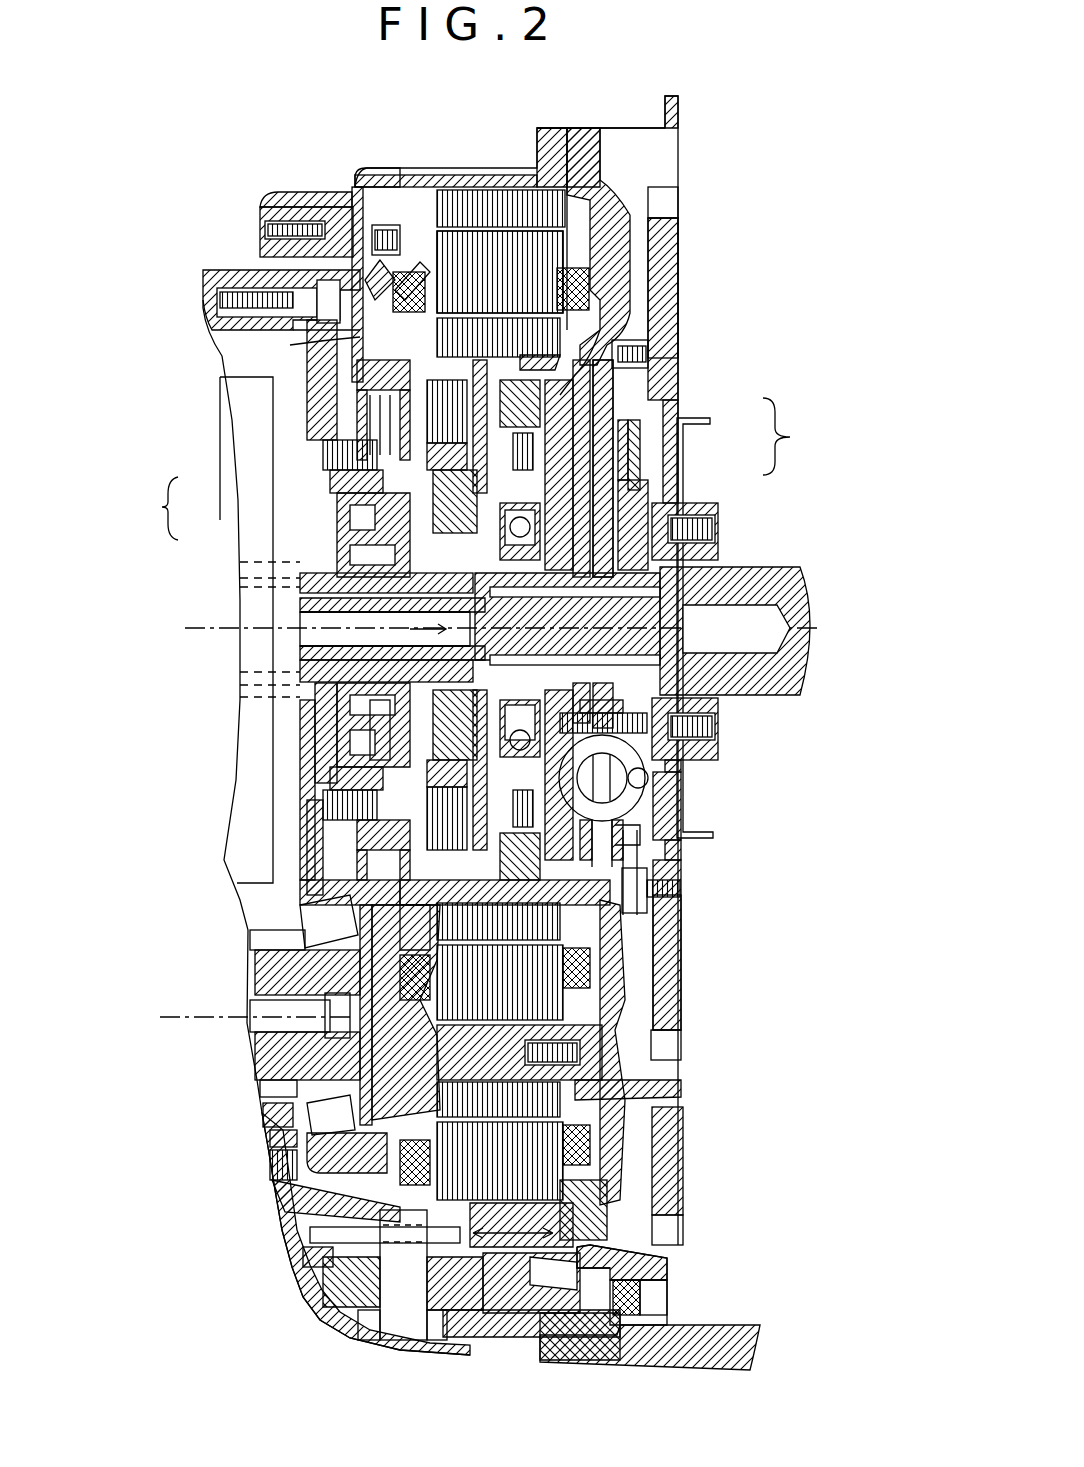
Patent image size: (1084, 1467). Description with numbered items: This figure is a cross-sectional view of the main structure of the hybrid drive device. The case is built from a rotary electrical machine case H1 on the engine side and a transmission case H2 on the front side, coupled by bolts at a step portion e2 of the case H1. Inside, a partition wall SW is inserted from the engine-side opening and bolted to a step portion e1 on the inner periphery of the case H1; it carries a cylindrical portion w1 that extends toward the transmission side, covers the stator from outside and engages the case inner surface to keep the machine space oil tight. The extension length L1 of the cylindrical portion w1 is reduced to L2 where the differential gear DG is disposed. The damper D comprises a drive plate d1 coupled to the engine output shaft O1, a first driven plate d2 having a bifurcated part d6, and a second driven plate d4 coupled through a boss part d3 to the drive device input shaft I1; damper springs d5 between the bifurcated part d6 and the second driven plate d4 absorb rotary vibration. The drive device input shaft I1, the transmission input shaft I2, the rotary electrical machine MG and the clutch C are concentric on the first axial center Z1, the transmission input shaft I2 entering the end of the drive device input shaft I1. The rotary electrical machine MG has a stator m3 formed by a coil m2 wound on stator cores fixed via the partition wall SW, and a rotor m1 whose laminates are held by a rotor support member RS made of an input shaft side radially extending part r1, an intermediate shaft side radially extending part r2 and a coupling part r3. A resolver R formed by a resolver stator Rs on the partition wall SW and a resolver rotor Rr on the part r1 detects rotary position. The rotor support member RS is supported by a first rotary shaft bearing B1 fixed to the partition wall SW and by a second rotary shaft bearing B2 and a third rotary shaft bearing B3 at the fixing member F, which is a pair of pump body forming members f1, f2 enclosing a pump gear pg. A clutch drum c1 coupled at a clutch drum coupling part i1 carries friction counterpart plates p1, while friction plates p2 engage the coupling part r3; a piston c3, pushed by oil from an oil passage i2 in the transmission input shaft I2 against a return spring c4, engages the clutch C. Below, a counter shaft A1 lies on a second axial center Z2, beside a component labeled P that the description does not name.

The rotary electrical machine MG is at (516, 186).
The coil m2 is at (405, 270).
The stator m3 is at (468, 190).
The step portion e2 is at (400, 183).
The rotary electrical machine case H1 is at (672, 113).
The step portion e1 is at (597, 148).
The partition wall SW is at (630, 240).
The rotor support member RS is at (591, 330).
The bifurcated part d6 is at (645, 352).
The coupling part r3 is at (546, 368).
The transmission case H2 is at (217, 272).
The rotor m1 is at (292, 337).
The friction plates p2 is at (358, 380).
The friction counterpart plates p1 is at (355, 430).
The clutch drum c1 is at (360, 445).
The return spring c4 is at (358, 497).
The fixing member F is at (160, 508).
The pump body forming member f1 is at (355, 512).
The pump body forming member f2 is at (352, 540).
The third rotary shaft bearing B3 is at (300, 578).
The oil passage i2 is at (322, 618).
The first axial center Z1 is at (475, 630).
The transmission input shaft I2 is at (302, 656).
The second rotary shaft bearing B2 is at (322, 737).
The pump gear pg is at (340, 748).
The clutch drum coupling part i1 is at (410, 702).
The piston c3 is at (335, 836).
The intermediate shaft side radially extending part r2 is at (312, 882).
The bearing P is at (267, 935).
The second axial center Z2 is at (255, 1015).
The counter shaft A1 is at (260, 1057).
The input shaft side radially extending part r1 is at (404, 918).
The extension length of cylindrical portion L1 is at (695, 1110).
The differential gear DG is at (288, 1272).
The shortened extension length L2 is at (448, 1272).
The clutch C is at (610, 432).
The resolver stator Rs is at (617, 447).
The resolver rotor Rr is at (577, 483).
The resolver R is at (791, 436).
The first rotary shaft bearing B1 is at (563, 523).
The boss part d3 is at (670, 580).
The engine output shaft O1 is at (780, 567).
The drive device input shaft I1 is at (733, 700).
The damper springs d5 is at (648, 778).
The first driven plate d2 is at (633, 835).
The damper D is at (701, 894).
The drive plate d1 is at (681, 920).
The second driven plate d4 is at (638, 927).
The cylindrical portion w1 is at (525, 1010).